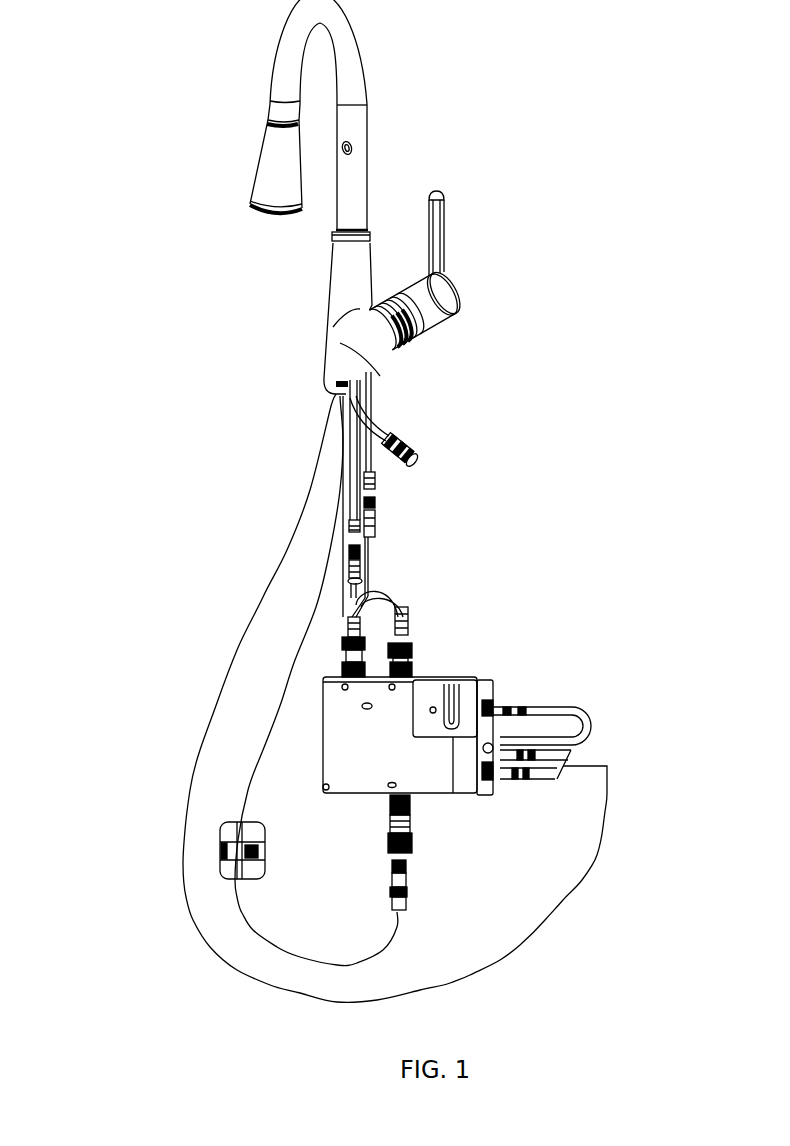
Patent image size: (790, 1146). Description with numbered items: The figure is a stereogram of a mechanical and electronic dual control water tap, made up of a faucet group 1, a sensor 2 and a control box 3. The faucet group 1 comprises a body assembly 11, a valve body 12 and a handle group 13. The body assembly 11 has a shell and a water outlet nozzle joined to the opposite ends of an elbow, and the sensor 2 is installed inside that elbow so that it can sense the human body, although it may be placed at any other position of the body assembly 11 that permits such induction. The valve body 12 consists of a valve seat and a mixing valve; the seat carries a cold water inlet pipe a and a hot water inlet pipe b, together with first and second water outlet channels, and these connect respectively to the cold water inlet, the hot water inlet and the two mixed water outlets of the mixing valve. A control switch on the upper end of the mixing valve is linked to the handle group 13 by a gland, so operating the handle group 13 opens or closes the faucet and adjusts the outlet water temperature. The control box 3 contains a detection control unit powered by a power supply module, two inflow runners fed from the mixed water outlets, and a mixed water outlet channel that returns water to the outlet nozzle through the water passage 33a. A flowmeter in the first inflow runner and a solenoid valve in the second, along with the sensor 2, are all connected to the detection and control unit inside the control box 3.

The faucet group 1 is at (367, 97).
The sensor 2 is at (355, 146).
The body assembly 11 is at (342, 284).
The valve body 12 is at (394, 352).
The handle group 13 is at (447, 280).
The control box 3 is at (487, 677).
The cold water inlet pipe a is at (413, 465).
The hot water inlet pipe b is at (415, 447).
The water passage 33a is at (235, 900).